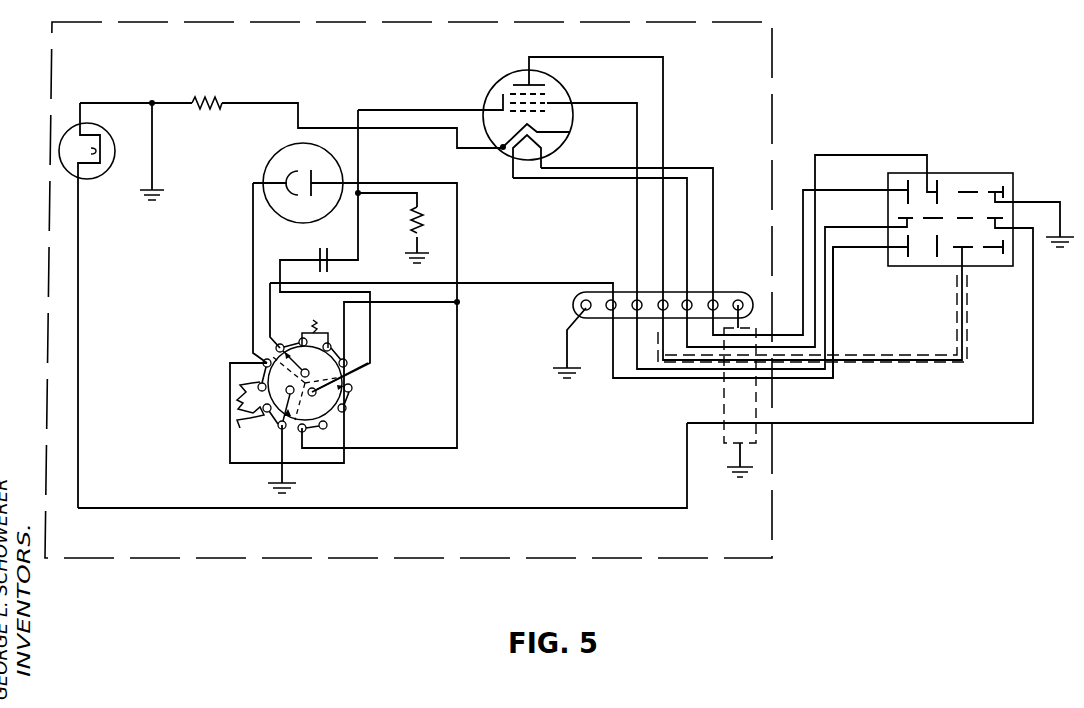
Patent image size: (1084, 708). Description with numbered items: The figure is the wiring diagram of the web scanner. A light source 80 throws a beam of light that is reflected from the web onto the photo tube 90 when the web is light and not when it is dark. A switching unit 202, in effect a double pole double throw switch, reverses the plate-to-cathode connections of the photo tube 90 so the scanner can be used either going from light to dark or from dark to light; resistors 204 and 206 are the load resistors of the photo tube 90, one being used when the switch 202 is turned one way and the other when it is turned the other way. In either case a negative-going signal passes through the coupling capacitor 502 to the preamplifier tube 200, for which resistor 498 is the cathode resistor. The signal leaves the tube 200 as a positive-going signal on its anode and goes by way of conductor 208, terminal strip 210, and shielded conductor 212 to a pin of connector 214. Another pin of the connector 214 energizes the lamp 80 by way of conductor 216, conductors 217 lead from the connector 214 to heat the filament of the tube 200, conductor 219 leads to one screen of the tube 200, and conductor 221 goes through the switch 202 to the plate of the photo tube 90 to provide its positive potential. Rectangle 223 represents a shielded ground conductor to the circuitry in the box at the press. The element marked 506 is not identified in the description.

The light source 80 is at (60, 151).
The photo tube 90 is at (278, 165).
The cathode resistor 498 is at (215, 97).
The preamplifier tube 200 is at (489, 96).
The conductor 208 is at (598, 57).
The resistor 506 is at (412, 222).
The coupling capacitor 502 is at (331, 263).
The load resistor 206 is at (315, 321).
The switching unit 202 is at (346, 419).
The load resistor 204 is at (240, 426).
The terminal strip 210 is at (576, 301).
The shielded conductor 212 is at (903, 357).
The connector 214 is at (963, 171).
The conductor 216 is at (618, 503).
The conductors 217 is at (851, 156).
The conductor 219 is at (856, 227).
The conductor 221 is at (834, 304).
The rectangle (shielded ground conductor) 223 is at (757, 404).